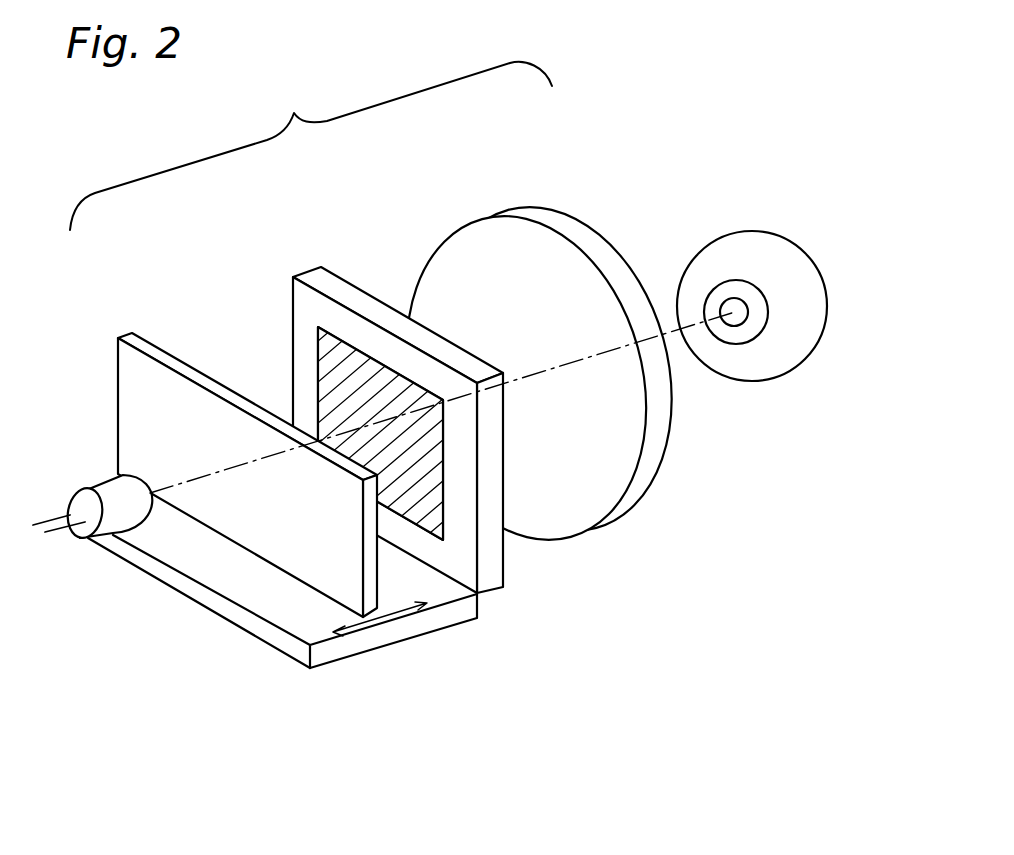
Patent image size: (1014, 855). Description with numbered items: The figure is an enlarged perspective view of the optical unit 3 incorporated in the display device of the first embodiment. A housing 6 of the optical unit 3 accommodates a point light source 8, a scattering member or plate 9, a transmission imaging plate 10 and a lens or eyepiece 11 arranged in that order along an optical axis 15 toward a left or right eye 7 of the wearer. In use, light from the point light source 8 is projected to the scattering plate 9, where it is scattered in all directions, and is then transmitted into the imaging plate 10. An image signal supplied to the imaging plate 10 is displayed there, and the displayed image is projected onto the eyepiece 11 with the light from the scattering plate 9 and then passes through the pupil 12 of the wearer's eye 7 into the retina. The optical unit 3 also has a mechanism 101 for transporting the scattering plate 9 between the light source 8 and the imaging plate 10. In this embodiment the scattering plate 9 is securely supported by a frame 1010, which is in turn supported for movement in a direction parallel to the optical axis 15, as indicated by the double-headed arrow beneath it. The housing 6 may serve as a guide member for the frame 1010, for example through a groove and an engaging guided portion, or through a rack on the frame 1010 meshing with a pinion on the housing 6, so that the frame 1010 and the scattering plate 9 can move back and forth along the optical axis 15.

The optical unit 3 is at (311, 146).
The housing 6 is at (262, 712).
The eye 7 is at (731, 233).
The point light source 8 is at (115, 478).
The scattering plate 9 is at (147, 340).
The transmission imaging plate 10 is at (330, 368).
The lens or eyepiece 11 is at (463, 235).
The pupil 12 is at (731, 316).
The optical axis 15 is at (544, 368).
The mechanism 101 is at (206, 624).
The frame 1010 is at (413, 640).